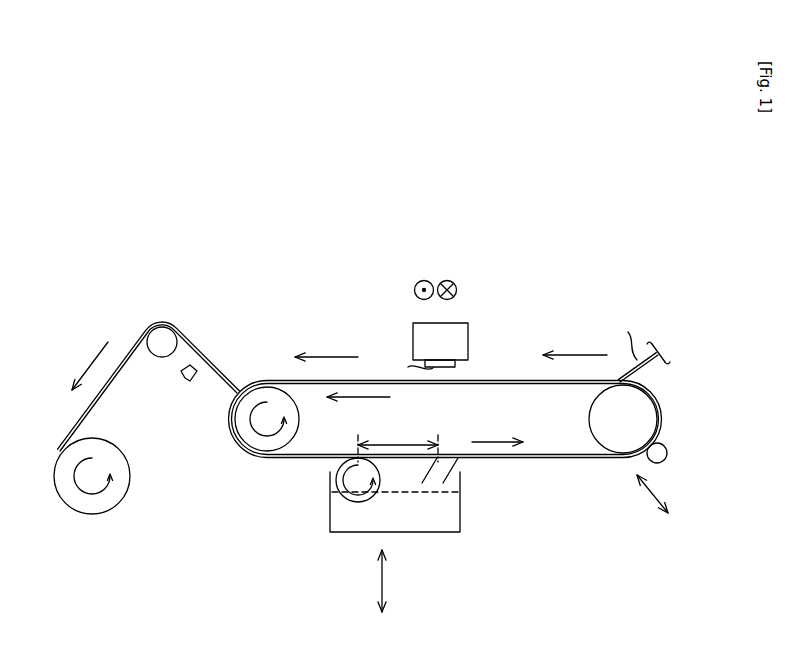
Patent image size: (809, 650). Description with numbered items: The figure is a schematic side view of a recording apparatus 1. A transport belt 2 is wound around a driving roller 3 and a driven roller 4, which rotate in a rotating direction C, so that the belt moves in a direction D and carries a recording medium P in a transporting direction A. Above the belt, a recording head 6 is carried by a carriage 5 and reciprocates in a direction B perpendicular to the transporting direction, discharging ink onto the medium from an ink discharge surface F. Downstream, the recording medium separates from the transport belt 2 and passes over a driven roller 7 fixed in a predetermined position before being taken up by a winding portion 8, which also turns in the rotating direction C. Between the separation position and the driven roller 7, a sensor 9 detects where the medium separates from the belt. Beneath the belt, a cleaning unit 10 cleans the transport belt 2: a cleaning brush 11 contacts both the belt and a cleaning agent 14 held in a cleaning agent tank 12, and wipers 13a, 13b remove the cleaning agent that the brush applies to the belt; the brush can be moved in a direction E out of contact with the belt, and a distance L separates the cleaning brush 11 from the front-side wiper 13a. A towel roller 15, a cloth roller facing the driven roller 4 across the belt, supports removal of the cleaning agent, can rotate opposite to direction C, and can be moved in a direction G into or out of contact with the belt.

The recording apparatus 1 is at (592, 271).
The transport belt 2 is at (535, 459).
The driving roller 3 is at (245, 437).
The driven roller 4 is at (640, 417).
The carriage 5 is at (466, 337).
The recording head 6 is at (457, 366).
The driven roller 7 is at (164, 330).
The winding portion 8 is at (78, 508).
The sensor 9 is at (183, 376).
The cleaning unit 10 is at (395, 530).
The cleaning brush 11 is at (335, 480).
The cleaning agent tank 12 is at (338, 533).
The wiper 13a is at (427, 487).
The wiper 13b is at (452, 478).
The cleaning agent 14 is at (338, 518).
The towel roller 15 is at (667, 460).